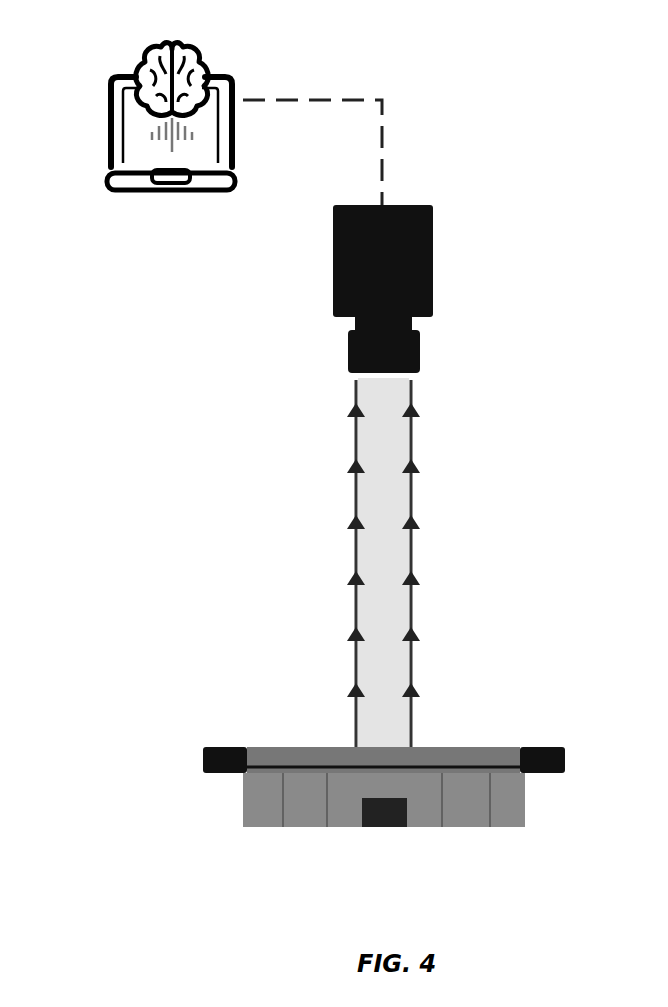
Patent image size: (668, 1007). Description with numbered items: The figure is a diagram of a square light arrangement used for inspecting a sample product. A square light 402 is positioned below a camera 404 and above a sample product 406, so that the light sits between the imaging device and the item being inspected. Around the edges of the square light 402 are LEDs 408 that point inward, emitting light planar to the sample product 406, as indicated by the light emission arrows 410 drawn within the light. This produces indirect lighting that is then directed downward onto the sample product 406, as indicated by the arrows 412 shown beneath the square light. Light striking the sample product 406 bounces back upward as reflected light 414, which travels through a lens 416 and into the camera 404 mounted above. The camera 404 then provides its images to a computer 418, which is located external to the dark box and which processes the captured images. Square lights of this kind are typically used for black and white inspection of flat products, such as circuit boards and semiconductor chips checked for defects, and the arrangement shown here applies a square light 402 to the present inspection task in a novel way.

The square light 402 is at (280, 748).
The camera 404 is at (433, 247).
The sample product 406 is at (385, 827).
The LEDs 408 is at (538, 747).
The light emission arrows 410 is at (452, 758).
The arrows 412 is at (283, 795).
The reflected light 414 is at (362, 503).
The lens 416 is at (420, 354).
The computer 418 is at (120, 128).